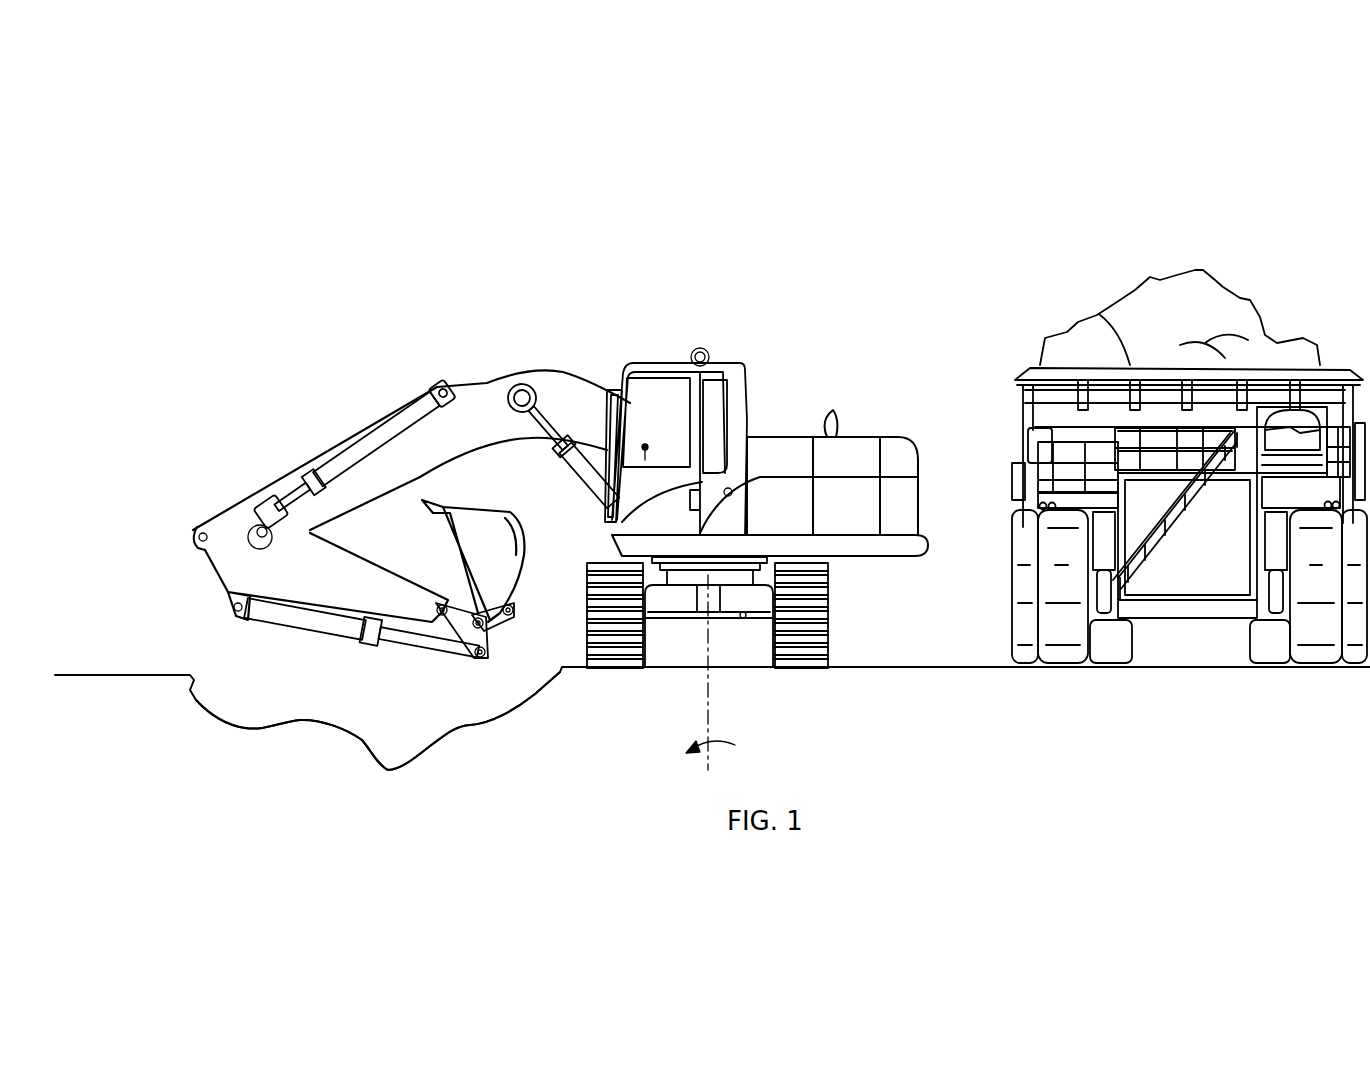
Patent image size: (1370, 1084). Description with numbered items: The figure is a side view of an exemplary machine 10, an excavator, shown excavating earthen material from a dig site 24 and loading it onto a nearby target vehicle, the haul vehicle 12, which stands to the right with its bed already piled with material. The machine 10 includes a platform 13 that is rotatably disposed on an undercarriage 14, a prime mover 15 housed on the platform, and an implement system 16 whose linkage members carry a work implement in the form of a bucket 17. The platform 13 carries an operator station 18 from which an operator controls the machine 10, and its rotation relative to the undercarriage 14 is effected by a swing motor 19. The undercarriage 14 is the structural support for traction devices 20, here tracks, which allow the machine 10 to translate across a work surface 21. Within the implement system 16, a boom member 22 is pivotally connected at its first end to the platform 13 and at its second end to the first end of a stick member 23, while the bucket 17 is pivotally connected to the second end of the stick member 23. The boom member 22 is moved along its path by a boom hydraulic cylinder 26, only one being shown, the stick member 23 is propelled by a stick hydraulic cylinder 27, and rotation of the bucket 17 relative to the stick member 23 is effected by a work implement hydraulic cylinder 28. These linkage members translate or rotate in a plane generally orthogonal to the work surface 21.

The machine 10 is at (818, 313).
The haul vehicle 12 is at (1243, 260).
The platform 13 is at (908, 541).
The undercarriage 14 is at (745, 597).
The prime mover 15 is at (868, 470).
The implement system 16 is at (183, 317).
The bucket 17 is at (510, 563).
The operator station 18 is at (660, 360).
The swing motor 19 is at (757, 574).
The traction devices 20 is at (815, 626).
The work surface 21 is at (882, 667).
The boom member 22 is at (500, 435).
The stick member 23 is at (328, 582).
The dig site 24 is at (323, 720).
The boom hydraulic cylinder 26 is at (585, 466).
The stick hydraulic cylinder 27 is at (358, 440).
The work implement hydraulic cylinder 28 is at (315, 627).